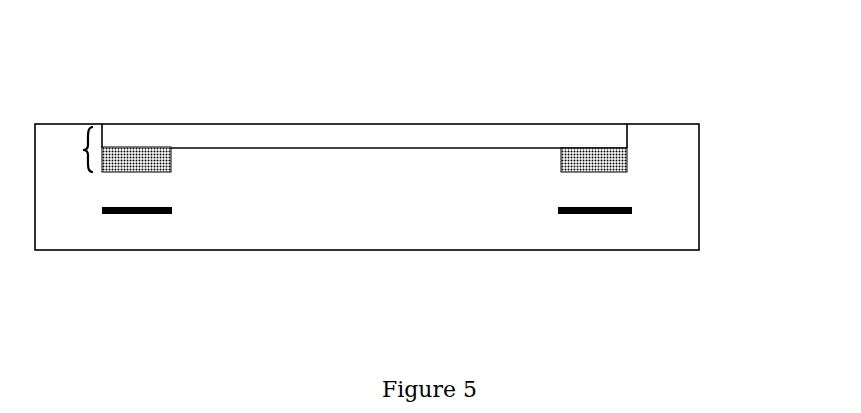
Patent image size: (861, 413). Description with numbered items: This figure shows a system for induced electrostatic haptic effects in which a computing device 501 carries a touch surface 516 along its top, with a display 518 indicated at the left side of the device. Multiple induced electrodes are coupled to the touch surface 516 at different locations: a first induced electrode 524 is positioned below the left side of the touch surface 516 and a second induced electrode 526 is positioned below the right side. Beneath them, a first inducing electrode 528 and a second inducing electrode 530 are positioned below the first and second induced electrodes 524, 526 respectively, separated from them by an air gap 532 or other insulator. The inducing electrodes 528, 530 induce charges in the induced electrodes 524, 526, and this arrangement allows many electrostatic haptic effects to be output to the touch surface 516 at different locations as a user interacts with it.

The computing device 501 is at (308, 243).
The touch surface 516 is at (798, 43).
The display 518 is at (125, 66).
The first induced electrode 524 is at (325, 80).
The second induced electrode 526 is at (648, 162).
The first inducing electrode 528 is at (134, 221).
The second inducing electrode 530 is at (599, 221).
The air gap 532 is at (102, 190).